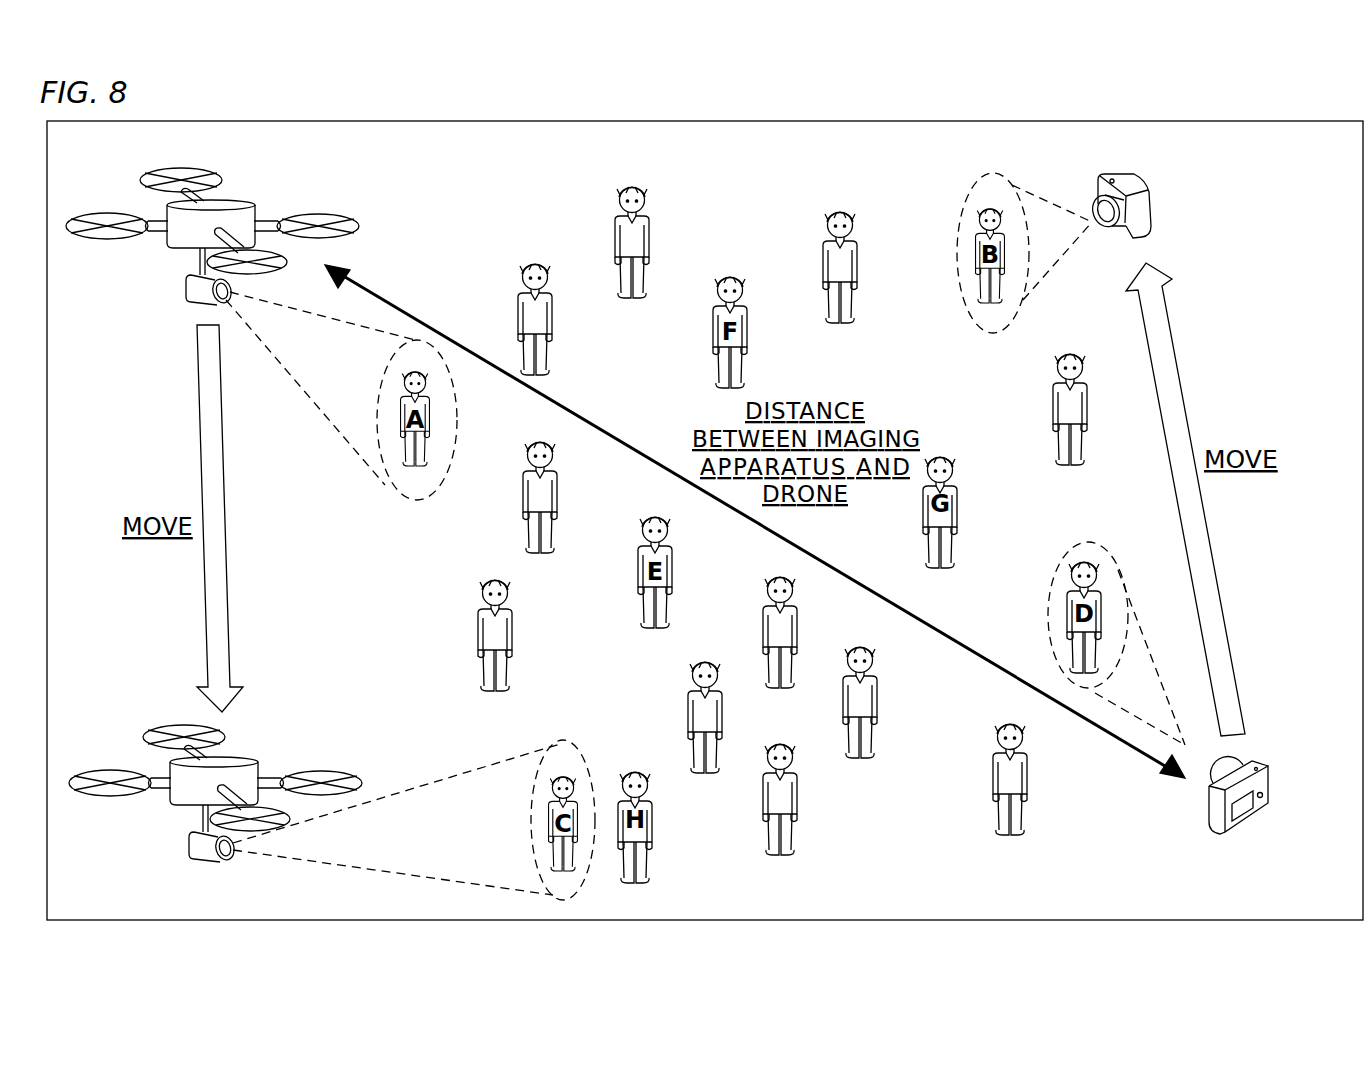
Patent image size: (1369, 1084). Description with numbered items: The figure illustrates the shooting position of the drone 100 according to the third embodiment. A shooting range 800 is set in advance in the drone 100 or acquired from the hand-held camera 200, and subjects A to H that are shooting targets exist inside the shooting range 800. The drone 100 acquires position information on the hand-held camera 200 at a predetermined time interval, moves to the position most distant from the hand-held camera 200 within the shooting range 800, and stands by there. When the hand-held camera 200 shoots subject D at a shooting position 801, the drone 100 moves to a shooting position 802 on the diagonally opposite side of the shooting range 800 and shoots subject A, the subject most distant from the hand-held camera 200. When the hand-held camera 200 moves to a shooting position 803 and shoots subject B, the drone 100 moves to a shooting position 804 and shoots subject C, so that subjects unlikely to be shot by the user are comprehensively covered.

The drone 100 is at (243, 515).
The hand-held camera 200 is at (1211, 510).
The shooting range 800 is at (1152, 121).
The shooting position 801 is at (1238, 810).
The shooting position 802 is at (212, 236).
The shooting position 803 is at (1154, 216).
The shooting position 804 is at (215, 793).